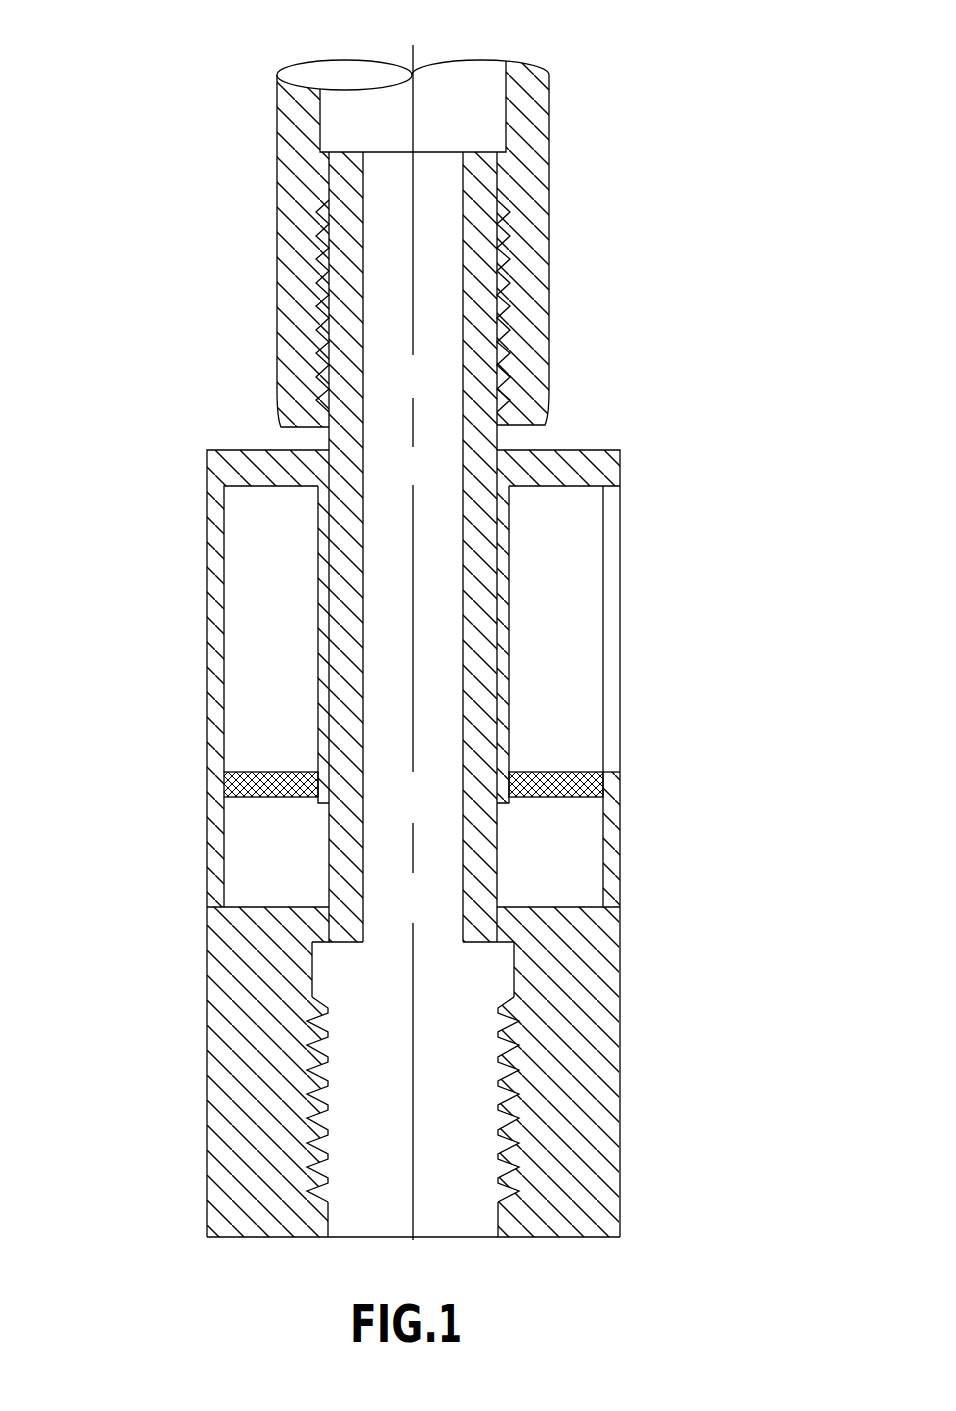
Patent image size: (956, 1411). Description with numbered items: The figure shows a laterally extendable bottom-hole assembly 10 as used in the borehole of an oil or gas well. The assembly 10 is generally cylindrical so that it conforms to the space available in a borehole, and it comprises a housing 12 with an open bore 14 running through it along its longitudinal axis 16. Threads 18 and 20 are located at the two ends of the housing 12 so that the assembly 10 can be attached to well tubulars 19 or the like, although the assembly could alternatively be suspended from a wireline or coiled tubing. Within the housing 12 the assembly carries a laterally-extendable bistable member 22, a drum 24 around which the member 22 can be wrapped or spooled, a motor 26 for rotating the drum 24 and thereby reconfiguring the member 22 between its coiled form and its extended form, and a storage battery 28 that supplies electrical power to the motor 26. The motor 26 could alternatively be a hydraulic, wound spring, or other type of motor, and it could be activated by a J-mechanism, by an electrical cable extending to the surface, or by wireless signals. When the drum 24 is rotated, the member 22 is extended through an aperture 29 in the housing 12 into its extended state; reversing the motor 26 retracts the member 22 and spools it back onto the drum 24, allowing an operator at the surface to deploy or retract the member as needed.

The laterally extendable bottom-hole assembly 10 is at (218, 27).
The housing 12 is at (545, 453).
The open bore 14 is at (368, 1213).
The longitudinal axis 16 is at (418, 1068).
The threads 18 is at (497, 272).
The well tubulars 19 is at (527, 117).
The threads 20 is at (512, 1167).
The laterally-extendable bistable member 22 is at (255, 527).
The drum 24 is at (322, 666).
The motor 26 is at (247, 772).
The storage battery 28 is at (236, 865).
The aperture 29 is at (607, 617).